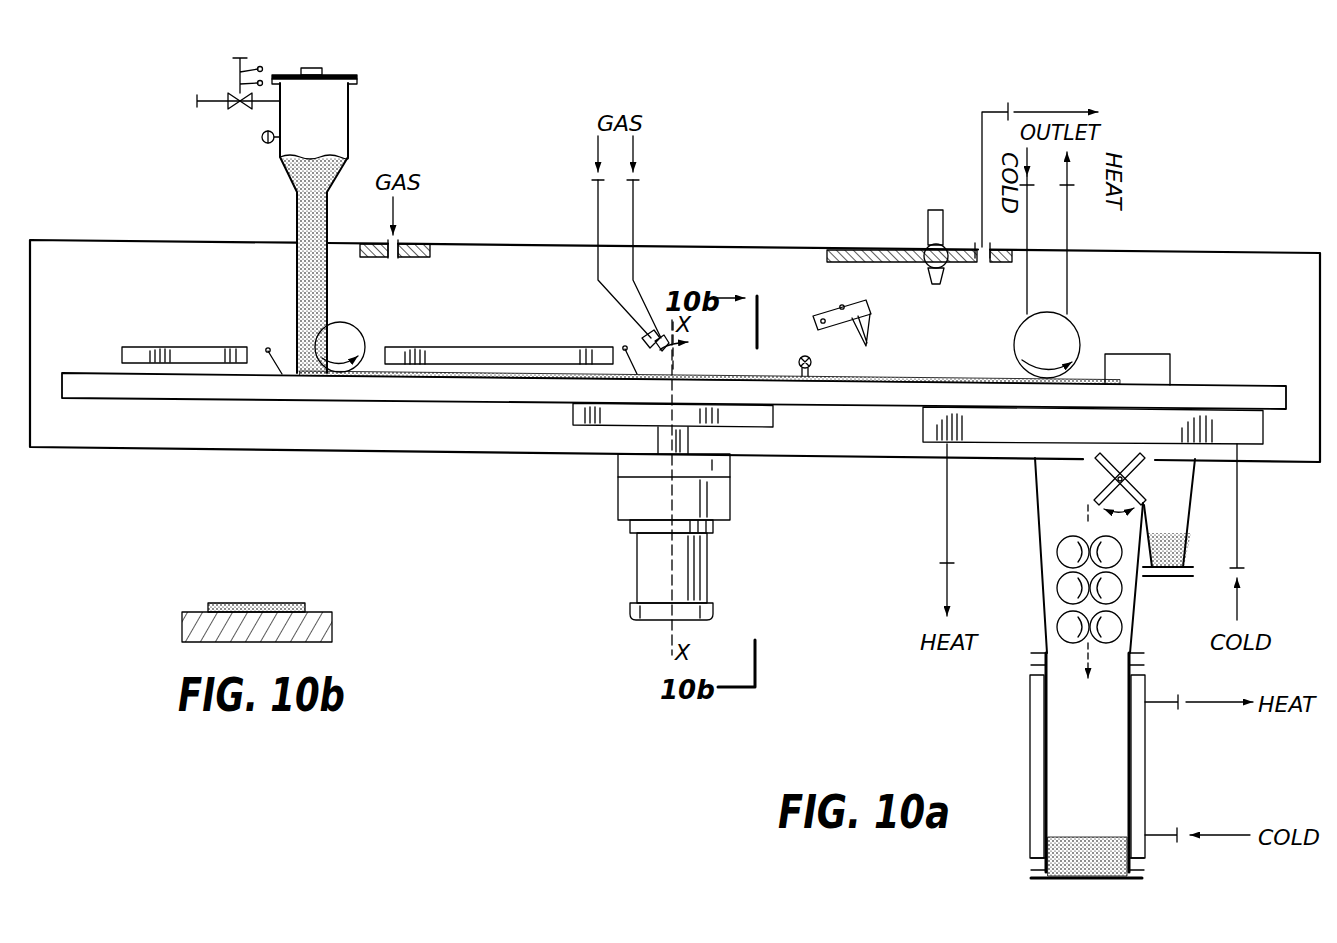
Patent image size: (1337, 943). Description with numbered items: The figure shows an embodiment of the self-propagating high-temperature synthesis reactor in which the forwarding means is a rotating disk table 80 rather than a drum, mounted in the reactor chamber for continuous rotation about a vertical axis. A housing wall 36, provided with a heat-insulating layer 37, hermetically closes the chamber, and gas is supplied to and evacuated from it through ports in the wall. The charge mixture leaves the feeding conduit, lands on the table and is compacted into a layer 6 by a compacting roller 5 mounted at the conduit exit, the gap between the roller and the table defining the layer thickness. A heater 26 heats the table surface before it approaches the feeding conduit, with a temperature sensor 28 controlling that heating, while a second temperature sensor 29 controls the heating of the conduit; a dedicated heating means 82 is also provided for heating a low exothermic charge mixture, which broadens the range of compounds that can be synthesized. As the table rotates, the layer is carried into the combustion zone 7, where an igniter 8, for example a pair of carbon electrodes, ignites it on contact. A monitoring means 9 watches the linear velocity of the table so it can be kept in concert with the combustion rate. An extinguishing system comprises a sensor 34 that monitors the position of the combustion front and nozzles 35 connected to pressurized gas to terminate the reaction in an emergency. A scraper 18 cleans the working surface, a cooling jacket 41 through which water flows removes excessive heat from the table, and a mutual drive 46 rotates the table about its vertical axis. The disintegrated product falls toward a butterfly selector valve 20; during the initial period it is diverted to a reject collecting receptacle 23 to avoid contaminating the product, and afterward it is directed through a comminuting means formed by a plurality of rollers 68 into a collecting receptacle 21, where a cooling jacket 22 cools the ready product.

In FIG. 10A, the housing wall 36 is at (94, 240).
In FIG. 10A, the heater 26 is at (166, 347).
In FIG. 10A, the temperature sensor 28 is at (282, 318).
In FIG. 10A, the compacting roller 5 is at (350, 335).
In FIG. 10A, the heating means 82 is at (452, 347).
In FIG. 10A, the disk table 80 is at (166, 388).
In FIG. 10B, the disk table 80 is at (186, 625).
In FIG. 10A, the layer 6 is at (468, 382).
In FIG. 10B, the layer 6 is at (304, 603).
In FIG. 10A, the temperature sensor 29 is at (622, 346).
In FIG. 10A, the nozzles 35 is at (693, 342).
In FIG. 10A, the sensor 34 is at (800, 357).
In FIG. 10A, the igniter 8 is at (837, 308).
In FIG. 10A, the heat-insulating layer 37 is at (853, 249).
In FIG. 10A, the monitoring means 9 is at (926, 241).
In FIG. 10A, the combustion zone 7 is at (922, 381).
In FIG. 10A, the scraper 18 is at (1165, 368).
In FIG. 10A, the drive 46 is at (628, 495).
In FIG. 10A, the cooling jacket 41 is at (926, 428).
In FIG. 10A, the butterfly selector valve 20 is at (1095, 483).
In FIG. 10A, the rollers 68 is at (1058, 574).
In FIG. 10A, the reject collecting receptacle 23 is at (1164, 573).
In FIG. 10A, the collecting receptacle 21 is at (1134, 752).
In FIG. 10A, the cooling jacket 22 is at (1146, 804).